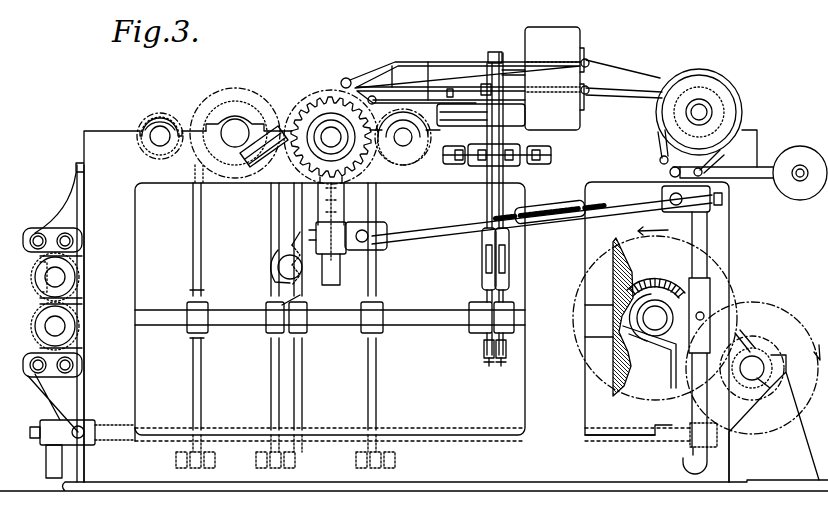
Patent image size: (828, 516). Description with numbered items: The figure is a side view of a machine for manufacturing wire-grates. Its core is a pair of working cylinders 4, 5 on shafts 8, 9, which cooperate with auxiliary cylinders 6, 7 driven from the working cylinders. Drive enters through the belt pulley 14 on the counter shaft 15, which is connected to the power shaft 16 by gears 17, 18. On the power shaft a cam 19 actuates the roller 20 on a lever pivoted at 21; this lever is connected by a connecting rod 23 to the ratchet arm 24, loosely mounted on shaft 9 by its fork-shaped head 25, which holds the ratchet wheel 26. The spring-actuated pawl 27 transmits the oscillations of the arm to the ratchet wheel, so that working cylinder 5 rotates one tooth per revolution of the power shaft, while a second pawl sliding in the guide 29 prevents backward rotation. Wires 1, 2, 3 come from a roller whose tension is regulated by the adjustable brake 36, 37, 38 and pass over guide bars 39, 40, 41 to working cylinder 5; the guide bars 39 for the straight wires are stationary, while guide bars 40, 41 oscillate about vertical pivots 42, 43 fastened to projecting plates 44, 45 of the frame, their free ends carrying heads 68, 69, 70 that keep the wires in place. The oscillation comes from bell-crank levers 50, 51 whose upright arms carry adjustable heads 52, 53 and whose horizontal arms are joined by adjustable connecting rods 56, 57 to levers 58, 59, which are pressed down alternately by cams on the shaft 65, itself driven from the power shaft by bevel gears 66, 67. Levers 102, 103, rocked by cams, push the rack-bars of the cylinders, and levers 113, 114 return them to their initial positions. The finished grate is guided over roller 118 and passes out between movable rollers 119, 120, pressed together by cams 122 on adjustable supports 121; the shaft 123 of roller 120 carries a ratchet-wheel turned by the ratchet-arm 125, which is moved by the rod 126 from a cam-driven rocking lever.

The straight wires 1 is at (594, 80).
The cross wires 2 is at (622, 68).
The cross wires 3 is at (619, 96).
The working cylinder 4 is at (205, 107).
The working cylinder 5 is at (308, 96).
The auxiliary cylinder 6 is at (158, 118).
The auxiliary cylinder 7 is at (427, 152).
The shaft 8 is at (226, 165).
The shaft 9 is at (331, 140).
The belt pulley 14 is at (782, 318).
The counter shaft 15 is at (756, 352).
The power shaft 16 is at (658, 316).
The gear 17 is at (792, 405).
The gear 18 is at (578, 372).
The cam 19 is at (674, 345).
The roller 20 is at (712, 318).
The pivot 21 is at (683, 462).
The connecting rod 23 is at (445, 225).
The ratchet arm 24 is at (336, 280).
The fork-shaped head 25 is at (295, 104).
The ratchet wheel 26 is at (322, 98).
The spring-actuated pawl 27 is at (346, 197).
The guide 29 is at (258, 170).
The adjustable brake 36 is at (704, 69).
The adjustable brake 37 is at (766, 165).
The adjustable brake 38 is at (806, 150).
The guide bars 39 is at (420, 78).
The guide bars 40 is at (432, 62).
The guide bars 41 is at (430, 64).
The vertical pivot 42 is at (450, 88).
The vertical pivot 43 is at (485, 84).
The projecting plate 44 is at (530, 45).
The projecting plate 45 is at (516, 110).
The bell-crank lever 50 is at (508, 134).
The bell-crank lever 51 is at (480, 118).
The adjustable head 52 is at (497, 52).
The adjustable head 53 is at (520, 73).
The adjustable connecting rod 56 is at (509, 288).
The adjustable connecting rod 57 is at (482, 284).
The lever 58 is at (507, 355).
The lever 59 is at (482, 357).
The shaft 65 is at (430, 327).
The bevel gear 66 is at (613, 250).
The bevel gear 67 is at (647, 281).
The head 68 is at (372, 70).
The head 69 is at (347, 78).
The head 70 is at (380, 86).
The lever 102 is at (270, 386).
The lever 103 is at (303, 384).
The lever 113 is at (193, 366).
The lever 114 is at (377, 386).
The roller 118 is at (268, 262).
The movable roller 119 is at (66, 277).
The movable roller 120 is at (72, 334).
The support 121 is at (58, 222).
The cam 122 is at (80, 236).
The shaft 123 is at (62, 330).
The ratchet-arm 125 is at (52, 470).
The rod 126 is at (164, 428).